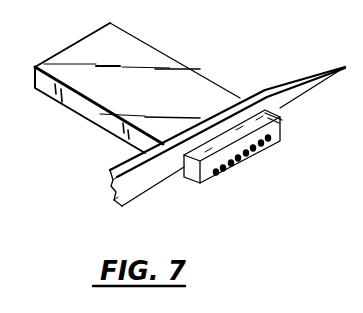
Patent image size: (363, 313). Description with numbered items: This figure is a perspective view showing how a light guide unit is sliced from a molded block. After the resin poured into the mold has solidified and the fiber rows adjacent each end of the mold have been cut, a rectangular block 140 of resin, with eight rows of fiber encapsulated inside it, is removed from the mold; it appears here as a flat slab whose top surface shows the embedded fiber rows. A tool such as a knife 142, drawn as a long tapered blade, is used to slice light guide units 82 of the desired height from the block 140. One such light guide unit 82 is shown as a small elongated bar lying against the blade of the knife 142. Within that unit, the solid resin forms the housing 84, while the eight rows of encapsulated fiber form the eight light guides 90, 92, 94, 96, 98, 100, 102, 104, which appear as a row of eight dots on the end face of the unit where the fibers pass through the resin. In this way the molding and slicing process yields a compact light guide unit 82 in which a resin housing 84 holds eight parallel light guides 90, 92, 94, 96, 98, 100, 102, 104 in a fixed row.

The rectangular block 140 is at (145, 57).
The knife 142 is at (298, 86).
The light guide unit 82 is at (227, 138).
The housing 84 is at (284, 121).
The light guide 90 is at (272, 137).
The light guide 92 is at (265, 144).
The light guide 94 is at (256, 151).
The light guide 96 is at (247, 156).
The light guide 98 is at (239, 161).
The light guide 100 is at (231, 166).
The light guide 102 is at (223, 171).
The light guide 104 is at (214, 176).